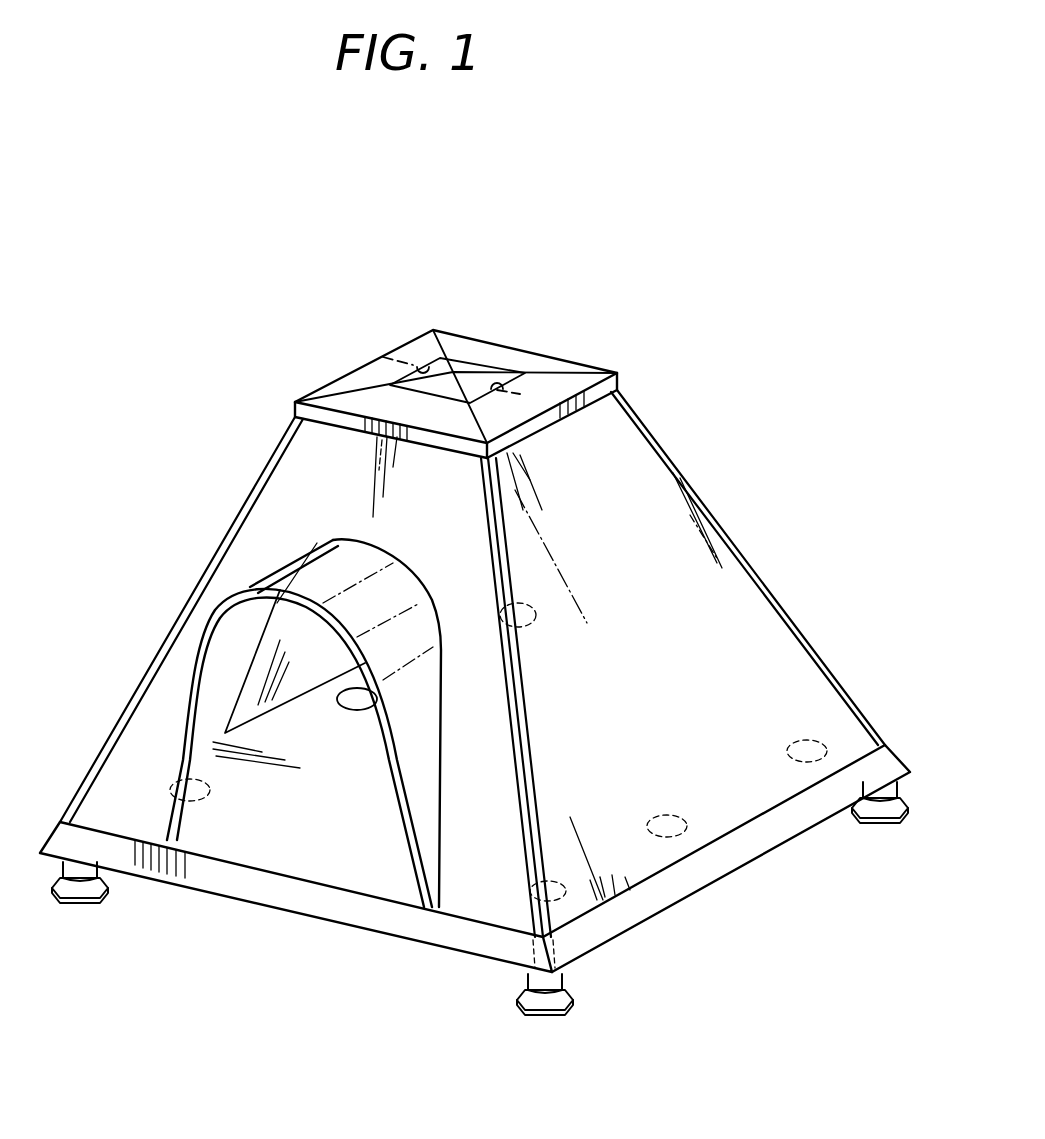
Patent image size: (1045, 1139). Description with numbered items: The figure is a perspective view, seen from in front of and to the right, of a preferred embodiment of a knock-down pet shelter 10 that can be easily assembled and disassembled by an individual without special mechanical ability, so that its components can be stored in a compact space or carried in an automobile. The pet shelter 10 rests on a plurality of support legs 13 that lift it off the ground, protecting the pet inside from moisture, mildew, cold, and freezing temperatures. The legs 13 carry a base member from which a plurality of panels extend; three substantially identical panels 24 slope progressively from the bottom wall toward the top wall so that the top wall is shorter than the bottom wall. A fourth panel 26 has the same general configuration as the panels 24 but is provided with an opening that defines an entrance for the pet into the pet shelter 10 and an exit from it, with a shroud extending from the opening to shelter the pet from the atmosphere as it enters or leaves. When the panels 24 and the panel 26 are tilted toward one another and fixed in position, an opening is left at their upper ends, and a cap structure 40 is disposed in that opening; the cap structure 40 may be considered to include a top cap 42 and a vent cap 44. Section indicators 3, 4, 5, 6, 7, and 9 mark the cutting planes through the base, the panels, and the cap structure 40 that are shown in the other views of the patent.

The pet shelter 10 is at (472, 740).
The support legs 13 is at (905, 790).
The panels 24 is at (818, 692).
The fourth panel 26 is at (503, 913).
The cap structure 40 is at (490, 334).
The top cap 42 is at (617, 393).
The vent cap 44 is at (415, 383).
The section line 3- 3 is at (113, 730).
The section line 4- 4 is at (715, 800).
The section line 5- 5 is at (767, 550).
The section line 6- 6 is at (567, 362).
The section line 7- 7 is at (508, 327).
The section line 9- 9 is at (413, 495).